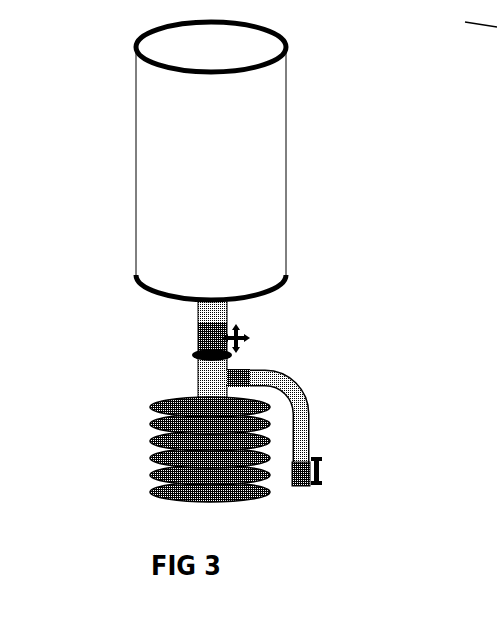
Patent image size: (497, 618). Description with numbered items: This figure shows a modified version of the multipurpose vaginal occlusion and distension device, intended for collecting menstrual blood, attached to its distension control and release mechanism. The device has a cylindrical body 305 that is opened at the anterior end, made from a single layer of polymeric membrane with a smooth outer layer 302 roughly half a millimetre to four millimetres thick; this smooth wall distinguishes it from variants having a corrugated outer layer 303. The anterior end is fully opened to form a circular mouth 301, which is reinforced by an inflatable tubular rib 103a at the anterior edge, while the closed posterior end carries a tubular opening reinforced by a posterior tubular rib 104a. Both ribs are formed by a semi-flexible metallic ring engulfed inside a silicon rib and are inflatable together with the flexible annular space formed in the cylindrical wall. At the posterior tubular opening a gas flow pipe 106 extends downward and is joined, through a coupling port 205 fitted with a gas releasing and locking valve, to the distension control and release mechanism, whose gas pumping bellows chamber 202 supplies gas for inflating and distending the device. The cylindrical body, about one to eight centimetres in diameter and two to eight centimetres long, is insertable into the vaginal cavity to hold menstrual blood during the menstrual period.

The circular mouth of the fully opened cylindrical body 301 is at (250, 56).
The inflatable tubular rib at the anterior edge of the cylindrical body 103a is at (278, 60).
The cylindrical body opened at the anterior end 305 is at (264, 151).
The smooth outer layer of the cylindrical body 302 is at (288, 197).
The corrugated outer layer of the cylindrical body 303 is at (477, 120).
The posterior tubular rib at the posterior edge of the cylindrical body 104a is at (293, 271).
The gas flow pipe fixed at the tubular opening at the posterior end of the cylinder 106 is at (235, 313).
The coupling port with gas releasing and locking valve 205 is at (252, 338).
The gas pumping bellows chamber 202 is at (277, 428).